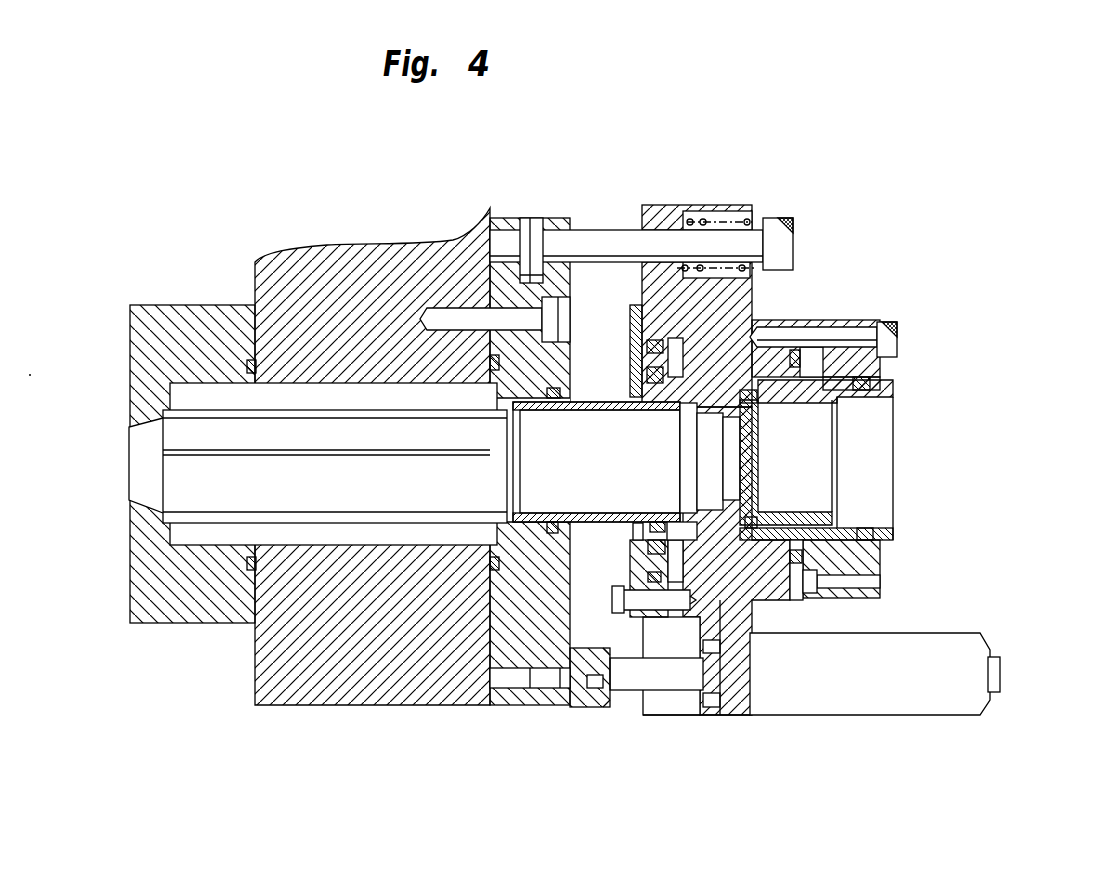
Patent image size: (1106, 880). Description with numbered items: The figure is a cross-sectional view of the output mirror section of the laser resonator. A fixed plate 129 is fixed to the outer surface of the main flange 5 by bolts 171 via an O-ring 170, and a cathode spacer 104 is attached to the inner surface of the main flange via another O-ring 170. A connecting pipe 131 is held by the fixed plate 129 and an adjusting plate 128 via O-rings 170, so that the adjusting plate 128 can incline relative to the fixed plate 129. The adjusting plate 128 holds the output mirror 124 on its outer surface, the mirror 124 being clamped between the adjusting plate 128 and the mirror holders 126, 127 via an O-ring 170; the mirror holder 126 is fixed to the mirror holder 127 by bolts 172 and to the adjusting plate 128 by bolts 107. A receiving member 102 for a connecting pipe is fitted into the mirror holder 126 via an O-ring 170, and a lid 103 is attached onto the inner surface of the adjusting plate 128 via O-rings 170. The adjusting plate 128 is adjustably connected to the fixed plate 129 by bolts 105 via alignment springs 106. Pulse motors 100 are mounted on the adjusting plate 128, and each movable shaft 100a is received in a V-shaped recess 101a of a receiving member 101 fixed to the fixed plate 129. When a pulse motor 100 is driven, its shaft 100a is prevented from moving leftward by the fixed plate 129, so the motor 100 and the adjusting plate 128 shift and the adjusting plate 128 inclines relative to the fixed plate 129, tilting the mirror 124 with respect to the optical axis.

The main flange 5 is at (258, 688).
The pulse motor 100 is at (858, 712).
The movable shaft 100a is at (622, 683).
The receiving member 101 is at (600, 697).
The recess 101a is at (568, 662).
The receiving member for a connecting pipe 102 is at (893, 390).
The lid 103 is at (683, 540).
The cathode spacer 104 is at (230, 597).
The bolt 105 is at (780, 260).
The alignment spring 106 is at (760, 215).
The bolt 107 is at (865, 333).
The output mirror 124 is at (764, 482).
The mirror holder 126 is at (880, 597).
The mirror holder 127 is at (897, 350).
The adjusting plate 128 is at (670, 204).
The fixed plate 129 is at (556, 220).
The connecting pipe 131 is at (490, 572).
The O-ring 170 is at (247, 365).
The bolt 171 is at (465, 312).
The bolt 172 is at (806, 578).